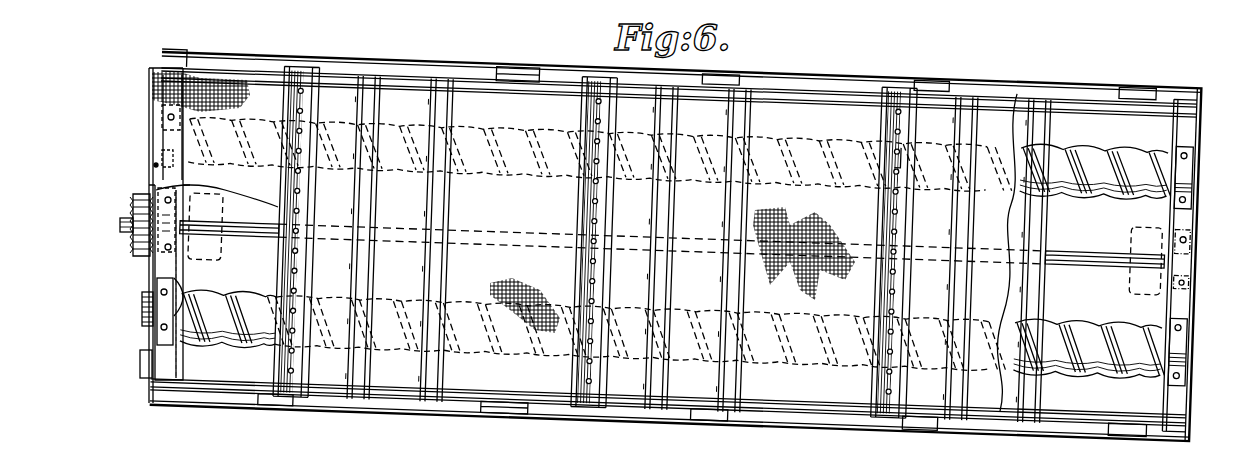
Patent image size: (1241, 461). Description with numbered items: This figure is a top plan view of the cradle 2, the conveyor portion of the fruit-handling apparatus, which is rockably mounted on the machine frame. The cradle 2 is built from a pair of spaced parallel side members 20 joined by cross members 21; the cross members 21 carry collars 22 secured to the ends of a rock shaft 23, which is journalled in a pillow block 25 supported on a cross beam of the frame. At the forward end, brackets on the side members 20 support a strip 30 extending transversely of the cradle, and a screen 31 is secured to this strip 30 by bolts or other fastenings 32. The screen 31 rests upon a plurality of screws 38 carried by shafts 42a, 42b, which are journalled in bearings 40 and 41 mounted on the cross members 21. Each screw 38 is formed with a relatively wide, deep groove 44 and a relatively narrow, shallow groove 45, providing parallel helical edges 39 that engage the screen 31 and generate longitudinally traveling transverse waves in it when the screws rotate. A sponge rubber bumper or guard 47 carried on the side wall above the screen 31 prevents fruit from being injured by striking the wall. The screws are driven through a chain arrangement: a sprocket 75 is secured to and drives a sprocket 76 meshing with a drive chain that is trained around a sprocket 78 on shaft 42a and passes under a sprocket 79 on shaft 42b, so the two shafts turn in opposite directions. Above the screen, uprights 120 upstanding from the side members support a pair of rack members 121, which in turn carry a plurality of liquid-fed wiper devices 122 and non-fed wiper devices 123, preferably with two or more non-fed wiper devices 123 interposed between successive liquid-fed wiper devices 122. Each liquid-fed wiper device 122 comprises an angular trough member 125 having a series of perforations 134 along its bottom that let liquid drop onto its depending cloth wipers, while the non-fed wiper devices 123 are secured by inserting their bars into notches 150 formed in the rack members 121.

The cradle 2 is at (847, 72).
The side member 20 is at (205, 398).
The cross member 21 is at (165, 360).
The collar 22 is at (1190, 243).
The rock shaft 23 is at (258, 230).
The pillow block 25 is at (1133, 280).
The strip 30 is at (145, 362).
The screen 31 is at (200, 78).
The fastening 32 is at (154, 165).
The screw 38 is at (240, 345).
The helical edge 39 is at (215, 293).
The bearing 40 is at (162, 110).
The bearing 41 is at (1188, 160).
The shaft 42a is at (178, 292).
The shaft 42b is at (160, 180).
The groove 44 is at (225, 298).
The groove 45 is at (215, 340).
The bumper or guard 47 is at (495, 88).
The sprocket 75 is at (135, 246).
The sprocket 76 is at (135, 215).
The sprocket 78 is at (145, 310).
The sprocket 79 is at (150, 142).
The upright 120 is at (275, 402).
The rack member 121 is at (560, 82).
The liquid-fed wiper device 122 is at (283, 177).
The non-fed wiper device 123 is at (432, 194).
The angular member 125 is at (308, 190).
The perforation 134 is at (893, 150).
The notch 150 is at (812, 408).